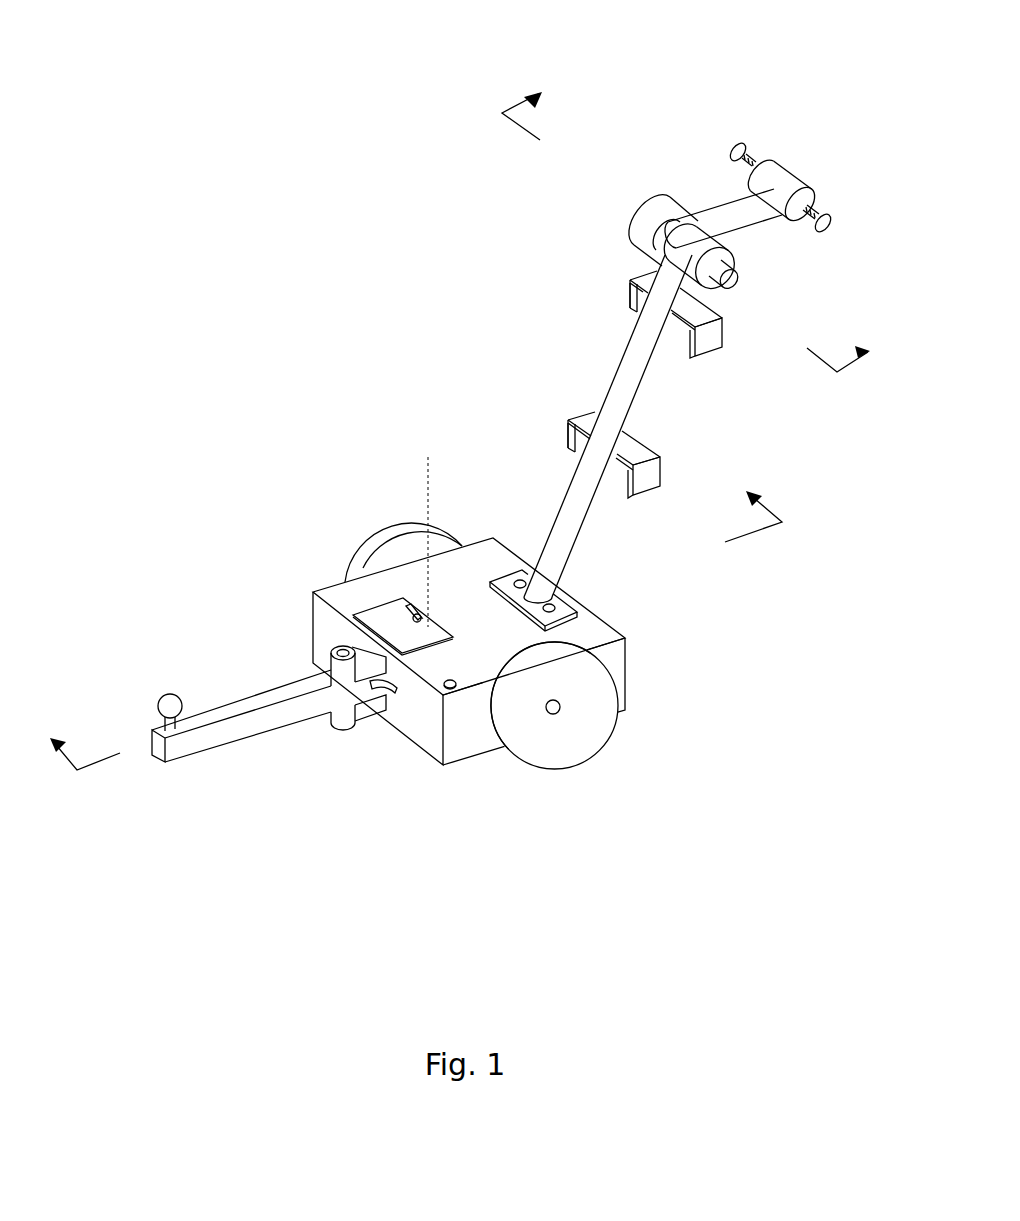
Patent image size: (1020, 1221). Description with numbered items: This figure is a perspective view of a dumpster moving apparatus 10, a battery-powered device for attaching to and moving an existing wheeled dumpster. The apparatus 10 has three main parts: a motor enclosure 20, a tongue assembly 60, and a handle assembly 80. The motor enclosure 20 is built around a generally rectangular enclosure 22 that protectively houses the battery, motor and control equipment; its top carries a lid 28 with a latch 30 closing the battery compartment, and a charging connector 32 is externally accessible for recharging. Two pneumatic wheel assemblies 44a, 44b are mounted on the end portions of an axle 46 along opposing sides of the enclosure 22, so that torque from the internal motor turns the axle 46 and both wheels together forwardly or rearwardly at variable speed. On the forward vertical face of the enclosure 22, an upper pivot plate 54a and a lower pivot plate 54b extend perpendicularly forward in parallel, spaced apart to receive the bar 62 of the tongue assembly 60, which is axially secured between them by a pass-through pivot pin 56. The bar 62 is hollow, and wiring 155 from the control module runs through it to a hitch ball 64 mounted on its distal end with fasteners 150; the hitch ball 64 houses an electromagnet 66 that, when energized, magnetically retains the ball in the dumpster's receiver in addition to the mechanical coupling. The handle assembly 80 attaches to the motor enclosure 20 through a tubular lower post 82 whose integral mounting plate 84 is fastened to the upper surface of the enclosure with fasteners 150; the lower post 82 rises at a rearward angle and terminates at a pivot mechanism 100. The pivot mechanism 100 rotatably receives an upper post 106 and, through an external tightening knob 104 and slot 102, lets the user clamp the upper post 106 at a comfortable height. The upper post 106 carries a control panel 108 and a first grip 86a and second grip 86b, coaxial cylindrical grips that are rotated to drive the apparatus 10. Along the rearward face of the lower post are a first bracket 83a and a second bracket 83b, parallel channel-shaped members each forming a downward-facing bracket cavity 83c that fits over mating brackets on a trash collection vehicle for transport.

The dumpster moving apparatus 10 is at (482, 192).
The motor enclosure 20 is at (628, 676).
The enclosure 22 is at (628, 647).
The lid 28 is at (425, 529).
The latch 30 is at (407, 610).
The charging connector 32 is at (455, 692).
The first wheel assembly 44a is at (572, 733).
The second wheel assembly 44b is at (412, 548).
The axle 46 is at (562, 707).
The upper pivot plate 54a is at (360, 667).
The lower pivot plate 54b is at (347, 727).
The pivot pin 56 is at (343, 654).
The tongue assembly 60 is at (249, 700).
The bar 62 is at (302, 688).
The hitch ball 64 is at (170, 697).
The electromagnet 66 is at (170, 724).
The handle assembly 80 is at (735, 152).
The lower post 82 is at (636, 355).
The first bracket 83a is at (653, 472).
The second bracket 83b is at (712, 338).
The bracket cavity 83c is at (676, 333).
The mounting plate 84 is at (588, 616).
The first grip 86a is at (750, 160).
The second grip 86b is at (814, 198).
The pivot mechanism 100 is at (645, 235).
The slot 102 is at (660, 245).
The tightening knob 104 is at (730, 288).
The upper post 106 is at (712, 214).
The control panel 108 is at (782, 170).
The fastener 150 is at (527, 586).
The wiring 155 is at (392, 698).